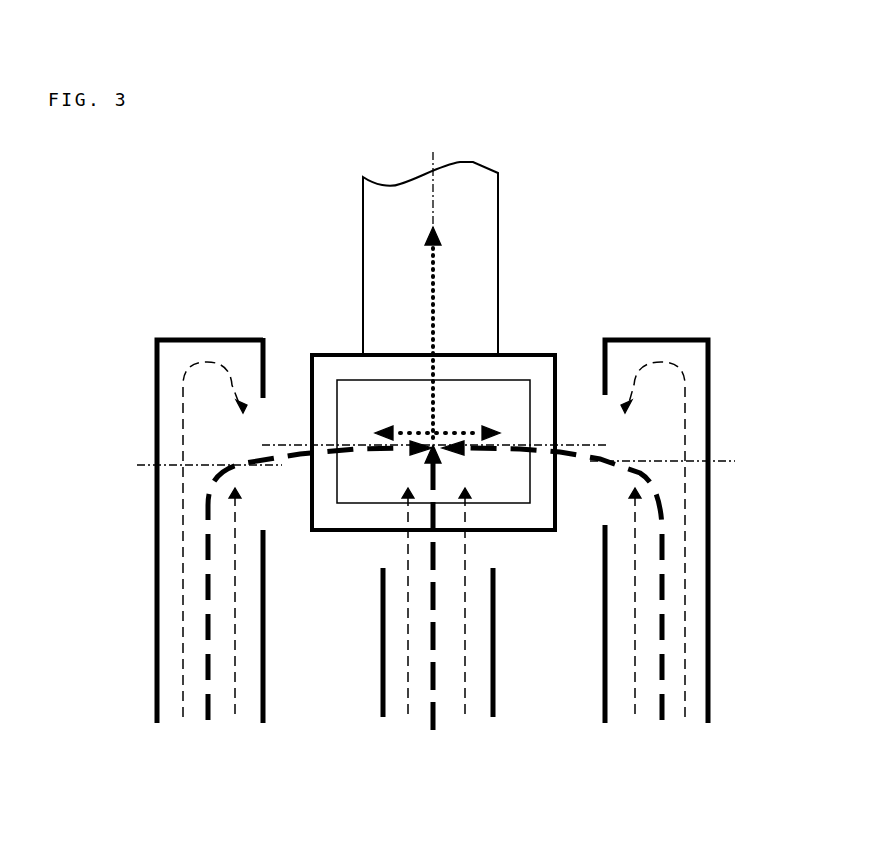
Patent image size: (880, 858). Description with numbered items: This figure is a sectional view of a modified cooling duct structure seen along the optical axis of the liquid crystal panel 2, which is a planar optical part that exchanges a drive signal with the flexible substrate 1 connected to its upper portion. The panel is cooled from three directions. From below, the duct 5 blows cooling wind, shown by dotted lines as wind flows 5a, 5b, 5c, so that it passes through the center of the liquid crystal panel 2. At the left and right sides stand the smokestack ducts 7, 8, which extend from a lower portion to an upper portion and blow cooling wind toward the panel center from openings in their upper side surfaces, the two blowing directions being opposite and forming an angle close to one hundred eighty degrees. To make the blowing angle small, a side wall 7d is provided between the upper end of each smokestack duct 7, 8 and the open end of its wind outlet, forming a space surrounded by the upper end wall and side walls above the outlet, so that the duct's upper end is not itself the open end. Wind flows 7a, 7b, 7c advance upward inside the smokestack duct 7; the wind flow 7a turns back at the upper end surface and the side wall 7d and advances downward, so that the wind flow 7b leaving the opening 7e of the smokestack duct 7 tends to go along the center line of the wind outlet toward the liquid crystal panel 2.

The flexible substrate 1 is at (478, 244).
The liquid crystal panel 2 is at (528, 355).
The duct 5 is at (495, 592).
The wind flow 5a is at (405, 720).
The wind flow 5b is at (435, 720).
The wind flow 5c is at (465, 720).
The smokestack duct 7 is at (185, 341).
The wind flow 7a is at (183, 720).
The wind flow 7b is at (207, 720).
The wind flow 7c is at (235, 720).
The side wall 7d is at (263, 372).
The opening 7e is at (260, 495).
The smokestack duct 8 is at (645, 340).